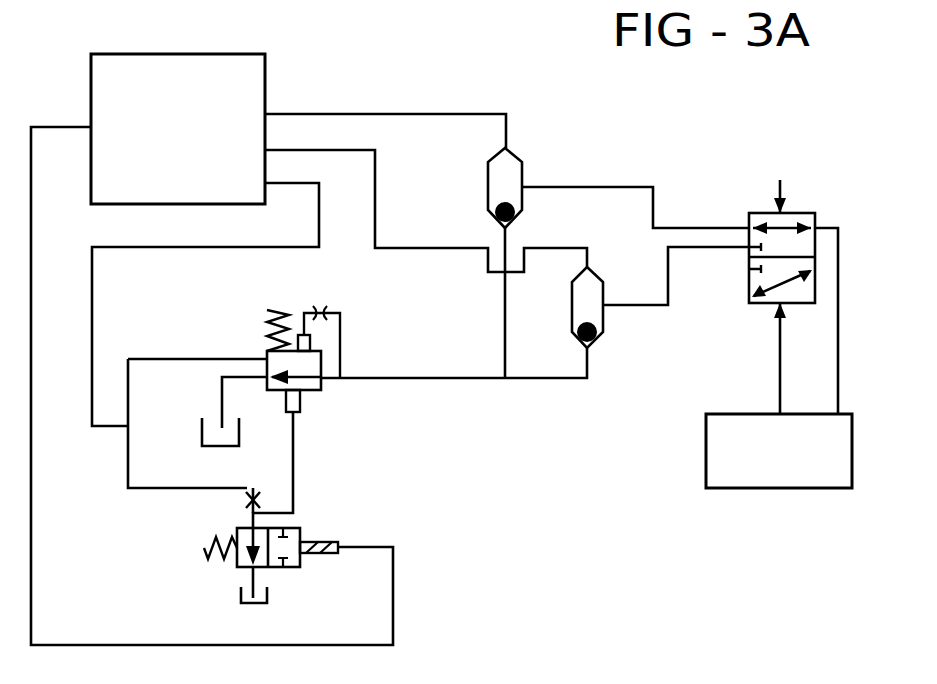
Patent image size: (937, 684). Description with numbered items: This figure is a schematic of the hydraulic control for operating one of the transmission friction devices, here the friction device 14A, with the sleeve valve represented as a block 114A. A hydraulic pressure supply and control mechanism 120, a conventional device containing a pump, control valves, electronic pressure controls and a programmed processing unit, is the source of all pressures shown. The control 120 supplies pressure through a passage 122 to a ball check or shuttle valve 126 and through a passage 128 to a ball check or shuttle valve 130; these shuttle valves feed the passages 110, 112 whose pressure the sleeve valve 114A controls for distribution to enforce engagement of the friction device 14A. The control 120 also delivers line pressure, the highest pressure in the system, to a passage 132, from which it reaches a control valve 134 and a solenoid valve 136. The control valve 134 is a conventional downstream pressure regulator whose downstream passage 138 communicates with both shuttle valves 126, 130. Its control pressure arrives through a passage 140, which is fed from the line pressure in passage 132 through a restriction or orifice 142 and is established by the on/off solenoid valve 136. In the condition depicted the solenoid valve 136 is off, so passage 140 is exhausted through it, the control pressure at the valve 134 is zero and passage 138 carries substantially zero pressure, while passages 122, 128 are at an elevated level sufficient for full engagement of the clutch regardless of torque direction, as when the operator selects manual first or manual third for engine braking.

The hydraulic pressure supply and control mechanism 120 is at (265, 78).
The passage 122 is at (382, 113).
The ball check or shuttle valve 126 is at (530, 168).
The passage 128 is at (431, 246).
The passage 110 is at (693, 227).
The sleeve valve 114A is at (800, 213).
The passage 112 is at (712, 250).
The ball check or shuttle valve 130 is at (604, 318).
The downstream passage 138 is at (481, 380).
The friction device 14A is at (706, 437).
The passage 132 is at (92, 304).
The control valve 134 is at (325, 388).
The passage 140 is at (295, 463).
The restriction or orifice 142 is at (245, 500).
The solenoid valve 136 is at (322, 556).